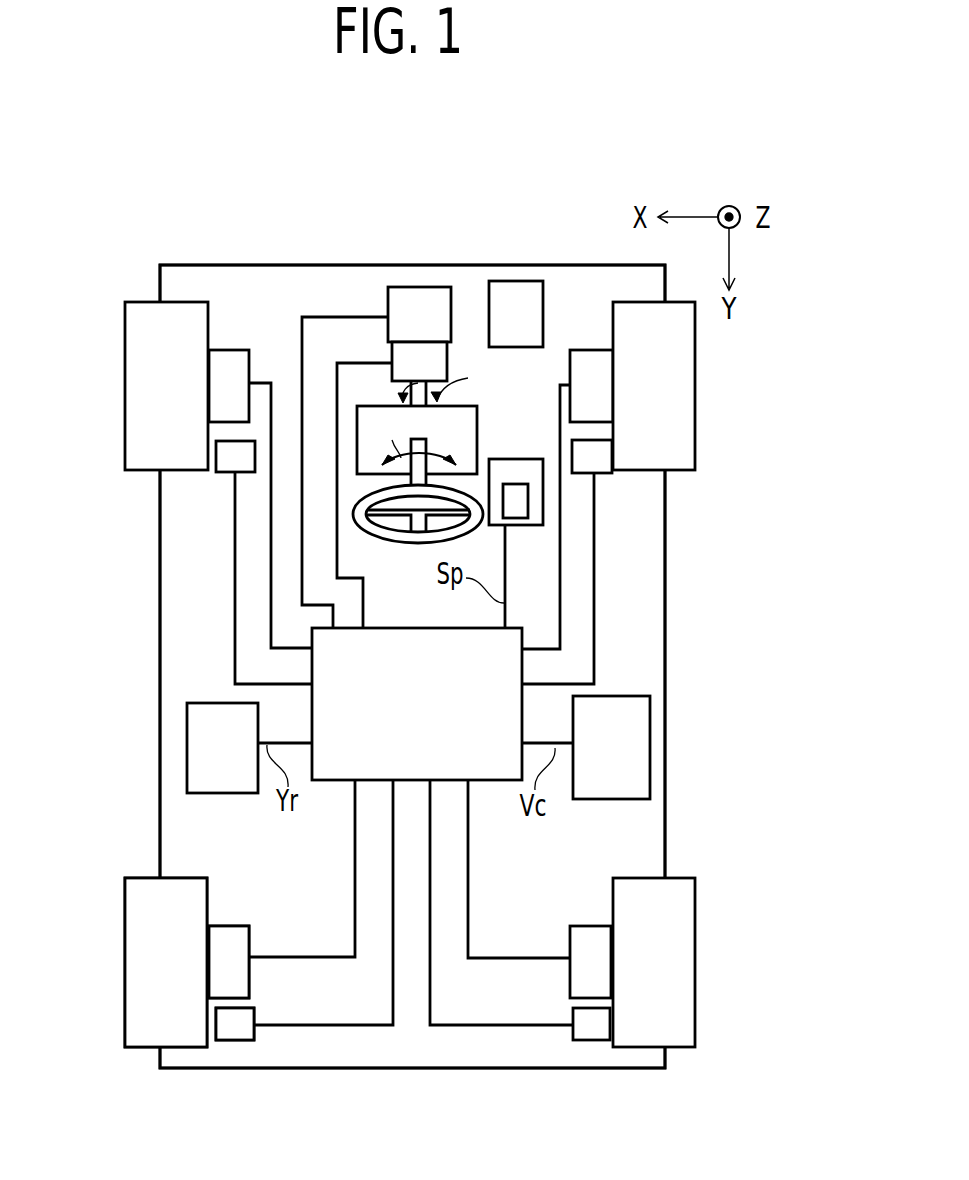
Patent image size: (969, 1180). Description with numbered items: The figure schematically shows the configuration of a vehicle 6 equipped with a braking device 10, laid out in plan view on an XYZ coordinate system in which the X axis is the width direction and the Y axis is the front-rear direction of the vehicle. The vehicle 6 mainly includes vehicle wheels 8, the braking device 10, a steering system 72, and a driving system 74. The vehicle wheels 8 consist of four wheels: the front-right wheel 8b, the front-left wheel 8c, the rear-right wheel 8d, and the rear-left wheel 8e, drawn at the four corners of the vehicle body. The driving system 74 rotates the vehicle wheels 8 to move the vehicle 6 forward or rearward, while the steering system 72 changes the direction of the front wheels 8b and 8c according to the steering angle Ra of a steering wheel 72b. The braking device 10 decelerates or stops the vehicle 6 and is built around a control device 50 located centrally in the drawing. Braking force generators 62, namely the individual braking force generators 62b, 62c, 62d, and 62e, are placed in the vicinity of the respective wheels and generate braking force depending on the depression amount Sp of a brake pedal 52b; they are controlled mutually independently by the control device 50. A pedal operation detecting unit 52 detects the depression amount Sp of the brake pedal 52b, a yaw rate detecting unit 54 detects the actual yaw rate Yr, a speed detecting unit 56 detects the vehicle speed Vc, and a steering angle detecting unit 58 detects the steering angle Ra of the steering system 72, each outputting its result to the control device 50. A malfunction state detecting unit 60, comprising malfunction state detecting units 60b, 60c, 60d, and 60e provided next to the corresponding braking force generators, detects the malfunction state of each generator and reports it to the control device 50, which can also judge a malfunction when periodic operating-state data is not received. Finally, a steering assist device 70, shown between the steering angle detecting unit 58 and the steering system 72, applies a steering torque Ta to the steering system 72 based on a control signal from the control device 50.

The vehicle 6 is at (326, 277).
The vehicle wheels 8 is at (109, 912).
The vehicle wheel (front-right wheel) 8b is at (687, 414).
The vehicle wheel (front-left wheel) 8c is at (140, 400).
The vehicle wheel (rear-right wheel) 8d is at (690, 980).
The vehicle wheel (rear-left wheel) 8e is at (140, 963).
The braking device 10 is at (182, 579).
The control device 50 is at (338, 774).
The pedal operation detecting unit 52 is at (511, 470).
The brake pedal 52b is at (517, 512).
The yaw rate detecting unit 54 is at (192, 754).
The speed detecting unit 56 is at (635, 743).
The steering angle detecting unit 58 is at (414, 297).
The malfunction state detecting unit 60 is at (273, 1039).
The malfunction state detecting unit 60b is at (602, 463).
The malfunction state detecting unit 60c is at (226, 463).
The malfunction state detecting unit 60d is at (588, 1030).
The malfunction state detecting unit 60e is at (235, 1030).
The braking force generators 62 is at (266, 946).
The braking force generator 62b is at (596, 365).
The braking force generator 62c is at (228, 360).
The braking force generator 62d is at (592, 938).
The braking force generator 62e is at (228, 938).
The steering assist device 70 is at (408, 357).
The steering system 72 is at (464, 423).
The steering wheel 72b is at (418, 545).
The driving system 74 is at (515, 292).